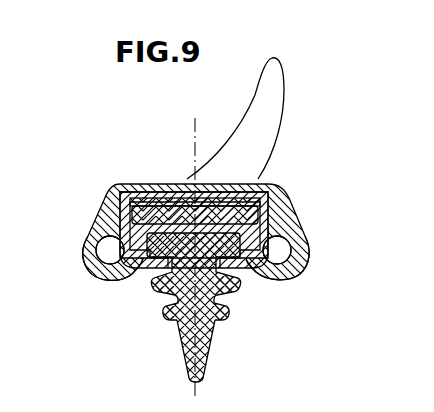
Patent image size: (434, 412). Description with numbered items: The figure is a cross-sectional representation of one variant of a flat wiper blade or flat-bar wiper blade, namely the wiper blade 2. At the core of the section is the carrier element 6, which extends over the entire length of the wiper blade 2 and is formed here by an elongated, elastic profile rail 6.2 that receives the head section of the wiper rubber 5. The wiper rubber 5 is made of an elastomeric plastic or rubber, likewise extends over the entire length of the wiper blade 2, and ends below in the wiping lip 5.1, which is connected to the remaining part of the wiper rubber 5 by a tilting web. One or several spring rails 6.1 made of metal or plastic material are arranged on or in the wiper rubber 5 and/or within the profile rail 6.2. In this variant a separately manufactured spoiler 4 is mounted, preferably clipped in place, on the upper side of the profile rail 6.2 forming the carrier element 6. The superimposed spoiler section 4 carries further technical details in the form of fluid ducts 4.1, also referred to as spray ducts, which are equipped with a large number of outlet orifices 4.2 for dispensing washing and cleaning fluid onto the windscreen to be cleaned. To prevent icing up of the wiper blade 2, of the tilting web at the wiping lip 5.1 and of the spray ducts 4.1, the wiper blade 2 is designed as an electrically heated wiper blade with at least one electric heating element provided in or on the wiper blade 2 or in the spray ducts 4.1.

The wiper blade 2 is at (287, 177).
The spoiler 4 is at (263, 127).
The fluid ducts 4.1 is at (110, 250).
The outlet orifices 4.2 is at (100, 267).
The wiper rubber 5 is at (193, 262).
The wiping lip 5.1 is at (203, 350).
The carrier element 6 is at (138, 267).
The spring rails 6.1 is at (183, 210).
The profile rail 6.2 is at (157, 203).